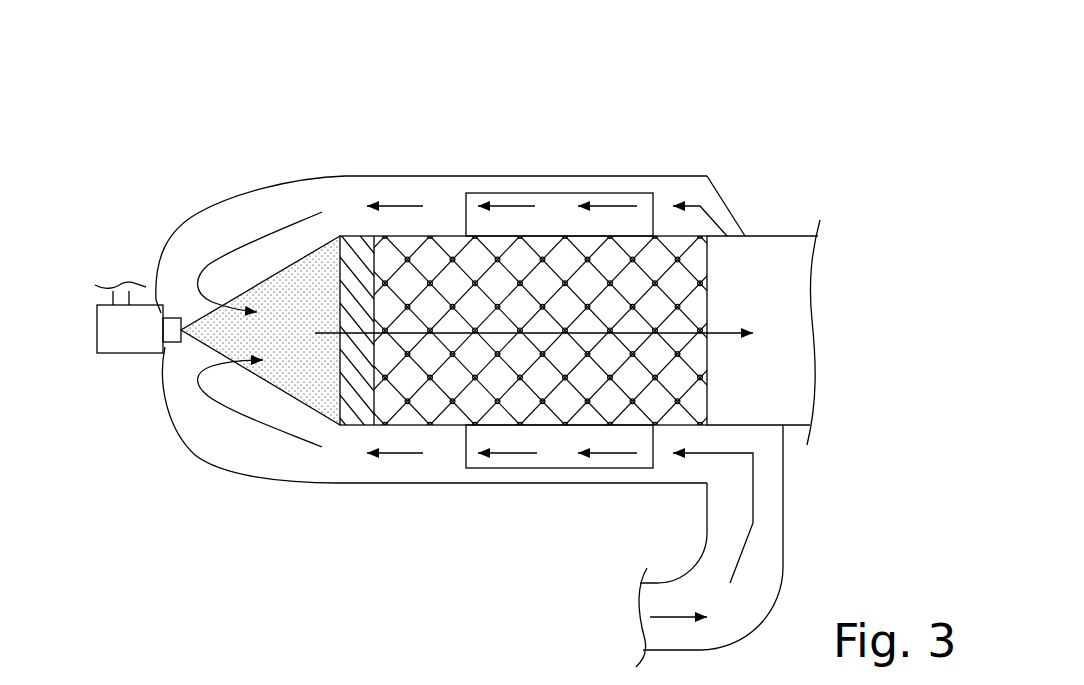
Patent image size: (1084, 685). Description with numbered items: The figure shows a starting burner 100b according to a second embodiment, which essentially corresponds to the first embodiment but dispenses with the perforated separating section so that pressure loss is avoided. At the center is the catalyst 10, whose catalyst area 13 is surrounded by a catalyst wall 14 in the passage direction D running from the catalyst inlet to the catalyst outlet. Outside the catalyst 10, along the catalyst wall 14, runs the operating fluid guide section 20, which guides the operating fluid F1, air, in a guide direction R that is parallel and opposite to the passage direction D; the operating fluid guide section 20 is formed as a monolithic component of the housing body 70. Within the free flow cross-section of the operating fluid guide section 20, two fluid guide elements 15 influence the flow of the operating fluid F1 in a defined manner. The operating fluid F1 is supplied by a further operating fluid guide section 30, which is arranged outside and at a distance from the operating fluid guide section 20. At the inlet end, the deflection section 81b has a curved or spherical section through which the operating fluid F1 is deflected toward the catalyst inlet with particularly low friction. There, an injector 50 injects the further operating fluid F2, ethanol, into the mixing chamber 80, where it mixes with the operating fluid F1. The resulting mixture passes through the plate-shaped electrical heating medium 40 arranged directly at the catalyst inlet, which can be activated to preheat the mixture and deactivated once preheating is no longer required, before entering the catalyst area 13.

The starting burner 100b is at (122, 160).
The deflection section 81b is at (250, 211).
The mixing chamber 80 is at (238, 433).
The heating medium 40 is at (358, 230).
The guide direction R is at (397, 207).
The catalyst 10 is at (542, 287).
The operating fluid guide section 20 is at (522, 309).
The fluid guide elements 15 is at (522, 193).
The catalyst wall 14 is at (550, 233).
The housing body 70 is at (658, 133).
The catalyst area 13 is at (675, 373).
The passage direction D is at (717, 332).
The further operating fluid F2 is at (272, 320).
The operating fluid F1 is at (397, 463).
The injector 50 is at (127, 357).
The operating fluid guide section 30 is at (658, 563).